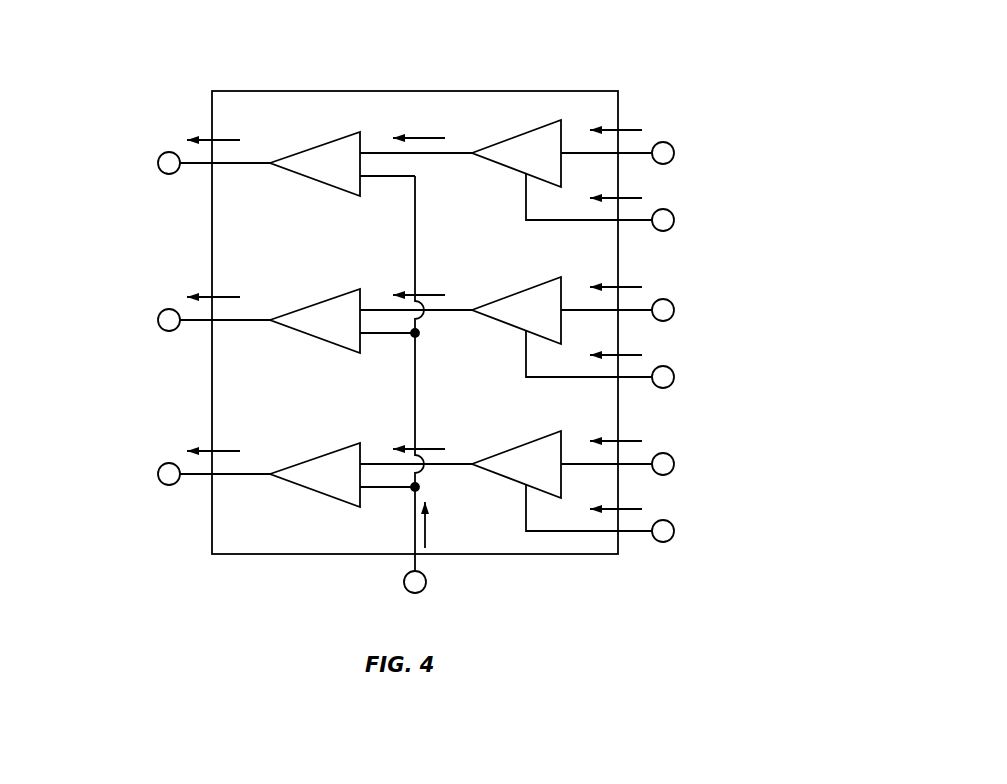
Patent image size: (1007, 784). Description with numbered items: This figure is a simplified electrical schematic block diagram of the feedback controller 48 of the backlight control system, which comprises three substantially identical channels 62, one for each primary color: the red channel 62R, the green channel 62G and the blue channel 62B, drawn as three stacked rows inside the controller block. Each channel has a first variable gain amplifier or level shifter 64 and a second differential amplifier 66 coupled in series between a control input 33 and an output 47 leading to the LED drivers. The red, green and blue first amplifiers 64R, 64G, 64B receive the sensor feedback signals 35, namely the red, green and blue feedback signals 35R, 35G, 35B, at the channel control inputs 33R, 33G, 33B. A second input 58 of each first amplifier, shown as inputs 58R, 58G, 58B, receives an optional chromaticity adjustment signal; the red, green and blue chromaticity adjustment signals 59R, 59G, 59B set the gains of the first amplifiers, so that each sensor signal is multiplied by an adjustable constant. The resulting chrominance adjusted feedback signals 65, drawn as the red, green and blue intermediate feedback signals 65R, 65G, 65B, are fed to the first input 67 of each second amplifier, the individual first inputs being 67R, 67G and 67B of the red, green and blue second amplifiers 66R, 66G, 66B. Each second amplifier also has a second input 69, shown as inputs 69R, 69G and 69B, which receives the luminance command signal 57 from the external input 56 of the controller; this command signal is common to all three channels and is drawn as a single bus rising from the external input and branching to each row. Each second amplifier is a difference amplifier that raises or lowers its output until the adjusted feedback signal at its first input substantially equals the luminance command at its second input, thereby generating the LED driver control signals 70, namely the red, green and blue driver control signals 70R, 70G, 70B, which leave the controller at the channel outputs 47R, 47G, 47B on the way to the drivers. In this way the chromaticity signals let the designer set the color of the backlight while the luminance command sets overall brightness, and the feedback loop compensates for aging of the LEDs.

The control input 33 is at (727, 100).
The blue channel control input 33B is at (674, 153).
The green channel control input 33G is at (674, 310).
The red channel control input 33R is at (674, 464).
The feedback signals 35 is at (627, 80).
The blue feedback signal 35B is at (628, 129).
The green feedback signal 35G is at (628, 286).
The red feedback signal 35R is at (628, 440).
The output 47 is at (168, 570).
The blue channel output 47B is at (168, 175).
The green channel output 47G is at (168, 332).
The red channel output 47R is at (168, 486).
The controller 48 is at (250, 556).
The external input 56 is at (426, 583).
The luminance command signal 57 is at (431, 538).
The chromaticity reference inputs 58 is at (663, 570).
The blue chromaticity input 58B is at (674, 222).
The green chromaticity input 58G is at (674, 379).
The red chromaticity input 58R is at (674, 533).
The blue chromaticity adjustment signal 59B is at (628, 197).
The green chromaticity adjustment signal 59G is at (628, 354).
The red chromaticity adjustment signal 59R is at (628, 508).
The channels 62 is at (101, 80).
The blue channel 62B is at (132, 162).
The green channel 62G is at (132, 319).
The red channel 62R is at (132, 473).
The first variable gain amplifier 64 is at (532, 80).
The blue first amplifier 64B is at (562, 153).
The green first amplifier 64G is at (562, 310).
The red first amplifier 64R is at (562, 464).
The chrominance adjusted feedback signal 65 is at (432, 80).
The blue intermediate feedback signal 65B is at (432, 135).
The green intermediate feedback signal 65G is at (432, 292).
The red intermediate feedback signal 65R is at (432, 446).
The second differential amplifier 66 is at (325, 80).
The blue second amplifier 66B is at (315, 164).
The green second amplifier 66G is at (315, 321).
The red second amplifier 66R is at (315, 475).
The first input of second amplifier 67 is at (363, 80).
The blue second-amplifier first input 67B is at (385, 151).
The green second-amplifier first input 67G is at (385, 308).
The red second-amplifier first input 67R is at (385, 462).
The second input of second amplifier 69 is at (381, 570).
The blue second-amplifier second input 69B is at (373, 178).
The green second-amplifier second input 69G is at (373, 335).
The red second-amplifier second input 69R is at (373, 489).
The LED driver control signals 70 is at (210, 80).
The blue LED driver control signal 70B is at (226, 138).
The green LED driver control signal 70G is at (226, 295).
The red LED driver control signal 70R is at (226, 449).